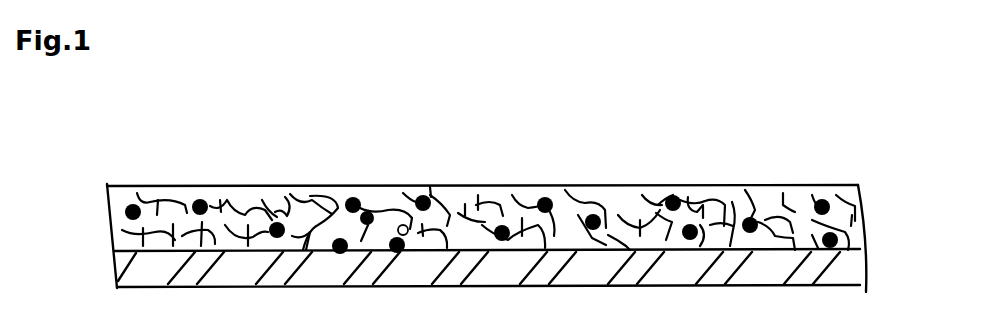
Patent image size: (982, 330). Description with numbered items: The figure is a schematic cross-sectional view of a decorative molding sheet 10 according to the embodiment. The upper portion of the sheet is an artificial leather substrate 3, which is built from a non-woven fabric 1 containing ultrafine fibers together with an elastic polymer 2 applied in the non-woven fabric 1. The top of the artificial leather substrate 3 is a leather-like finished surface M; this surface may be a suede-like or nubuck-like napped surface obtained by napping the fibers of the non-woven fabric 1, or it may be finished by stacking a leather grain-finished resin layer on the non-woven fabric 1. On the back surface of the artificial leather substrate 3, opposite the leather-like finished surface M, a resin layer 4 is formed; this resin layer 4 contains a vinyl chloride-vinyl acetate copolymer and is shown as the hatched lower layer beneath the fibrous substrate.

The decorative molding sheet 10 is at (148, 131).
The non-woven fabric 1 is at (718, 198).
The elastic polymer 2 is at (746, 215).
The artificial leather substrate 3 is at (842, 198).
The resin layer 4 is at (857, 270).
The leather-like finished surface M is at (437, 183).